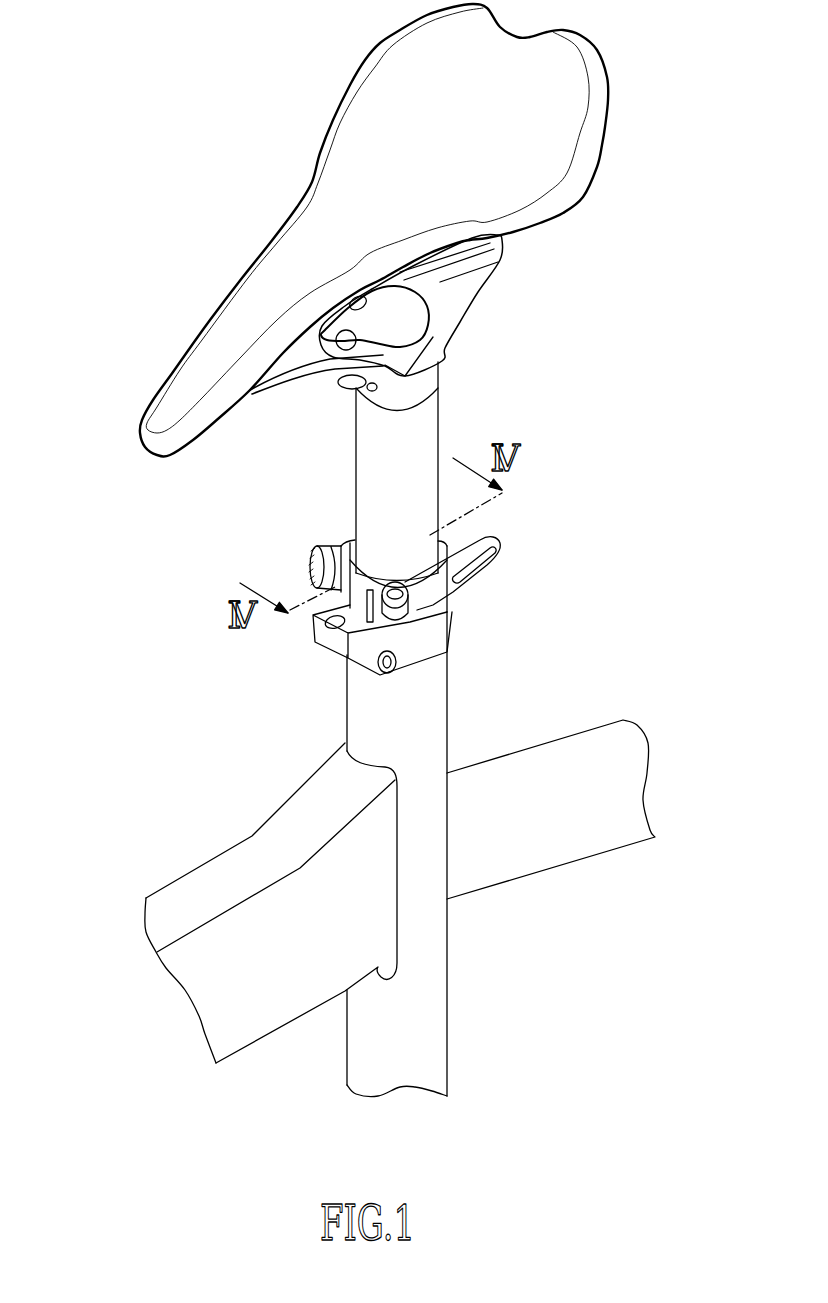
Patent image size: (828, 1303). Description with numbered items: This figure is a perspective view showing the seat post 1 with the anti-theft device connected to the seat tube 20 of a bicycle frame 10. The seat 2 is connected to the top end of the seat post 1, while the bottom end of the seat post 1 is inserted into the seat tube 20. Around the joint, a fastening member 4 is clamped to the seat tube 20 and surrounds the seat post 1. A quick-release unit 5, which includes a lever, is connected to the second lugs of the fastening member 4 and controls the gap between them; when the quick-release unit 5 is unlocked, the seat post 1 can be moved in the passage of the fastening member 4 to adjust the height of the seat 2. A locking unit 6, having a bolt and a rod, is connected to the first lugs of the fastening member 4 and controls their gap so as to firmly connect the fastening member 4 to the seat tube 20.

The seat post 1 is at (443, 423).
The seat 2 is at (615, 160).
The fastening member 4 is at (472, 626).
The quick-release unit 5 is at (338, 542).
The locking unit 6 is at (328, 629).
The bicycle frame 10 is at (182, 859).
The seat tube 20 is at (449, 718).